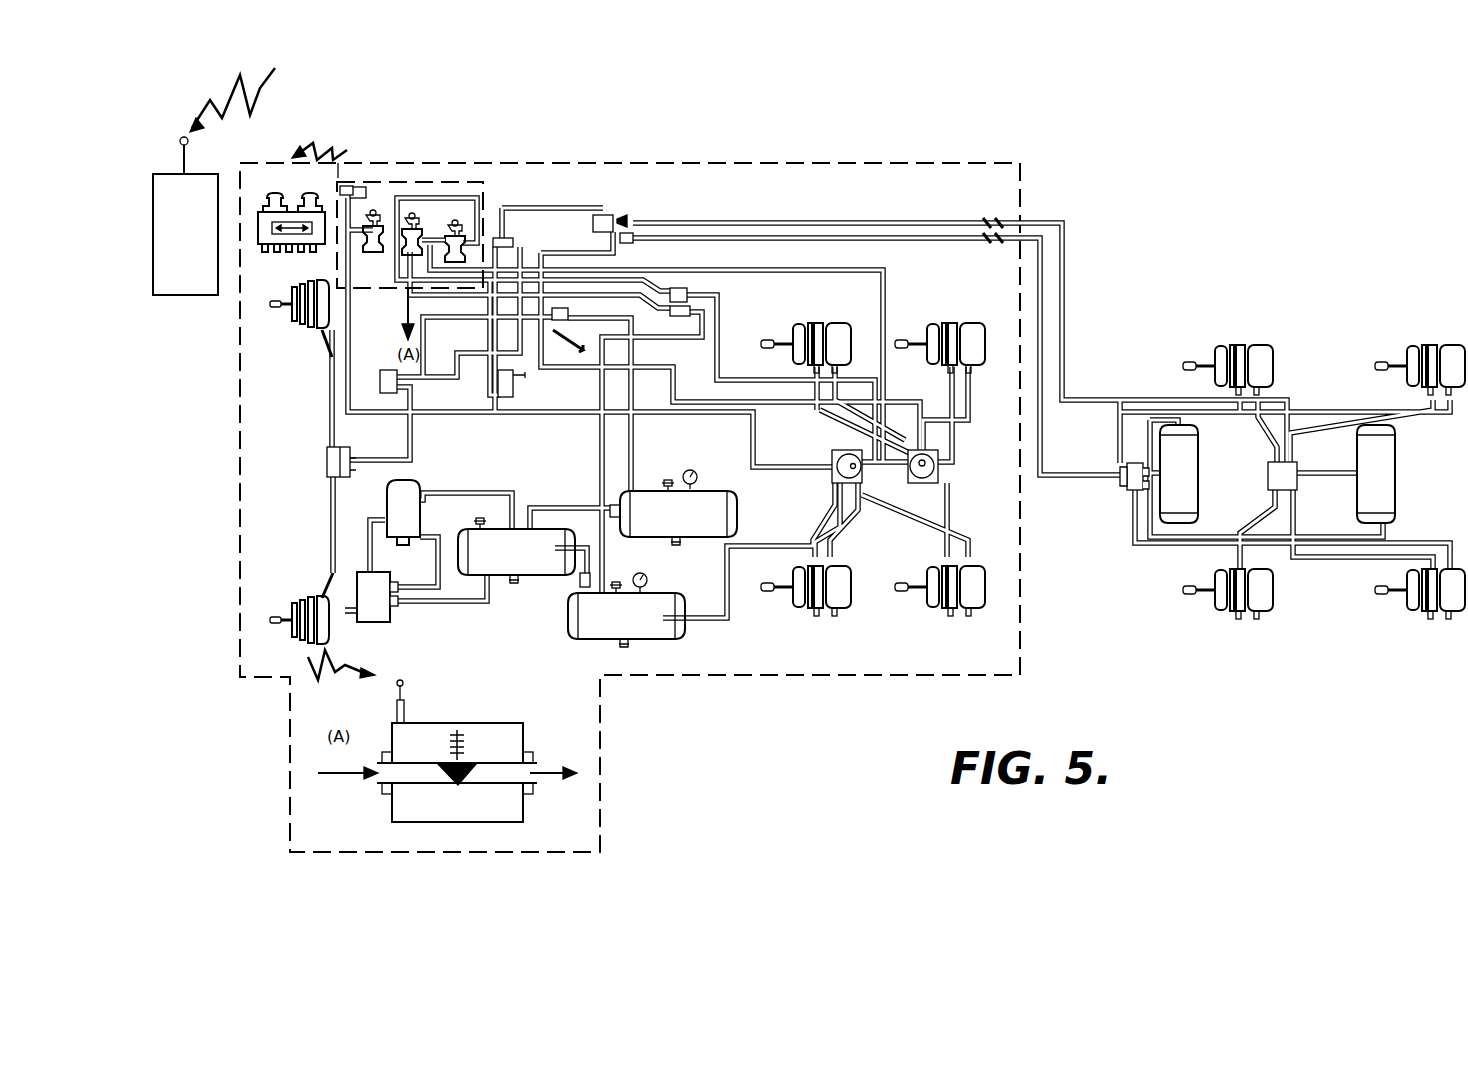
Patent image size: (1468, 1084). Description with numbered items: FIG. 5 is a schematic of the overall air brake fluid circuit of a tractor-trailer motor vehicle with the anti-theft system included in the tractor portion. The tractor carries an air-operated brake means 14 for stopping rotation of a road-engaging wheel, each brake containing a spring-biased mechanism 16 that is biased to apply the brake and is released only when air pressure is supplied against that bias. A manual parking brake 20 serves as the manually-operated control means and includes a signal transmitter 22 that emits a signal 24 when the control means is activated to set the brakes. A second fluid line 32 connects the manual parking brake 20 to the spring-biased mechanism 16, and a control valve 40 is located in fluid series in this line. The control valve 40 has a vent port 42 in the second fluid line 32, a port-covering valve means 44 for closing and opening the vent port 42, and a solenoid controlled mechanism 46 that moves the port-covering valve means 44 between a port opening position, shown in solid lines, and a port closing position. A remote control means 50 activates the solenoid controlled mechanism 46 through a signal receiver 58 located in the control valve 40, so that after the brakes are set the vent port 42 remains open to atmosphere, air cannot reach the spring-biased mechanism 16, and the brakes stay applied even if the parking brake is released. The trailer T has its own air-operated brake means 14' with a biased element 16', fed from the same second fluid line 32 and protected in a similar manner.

The air-operated brake means 14 is at (834, 586).
The spring-biased mechanism 16 is at (865, 617).
The trailer air-operated brake means 14' is at (1258, 352).
The biased element 16' is at (1200, 611).
The trailer T is at (1296, 466).
The manual parking brake 20 is at (467, 212).
The signal transmitter 22 is at (453, 189).
The signal 24 is at (275, 68).
The second fluid line 32 is at (385, 277).
The control valve 40 is at (447, 758).
The vent port 42 is at (470, 778).
The port-covering valve means 44 is at (443, 758).
The solenoid controlled mechanism 46 is at (463, 750).
The remote control means 50 is at (189, 310).
The signal receiver 58 is at (405, 700).